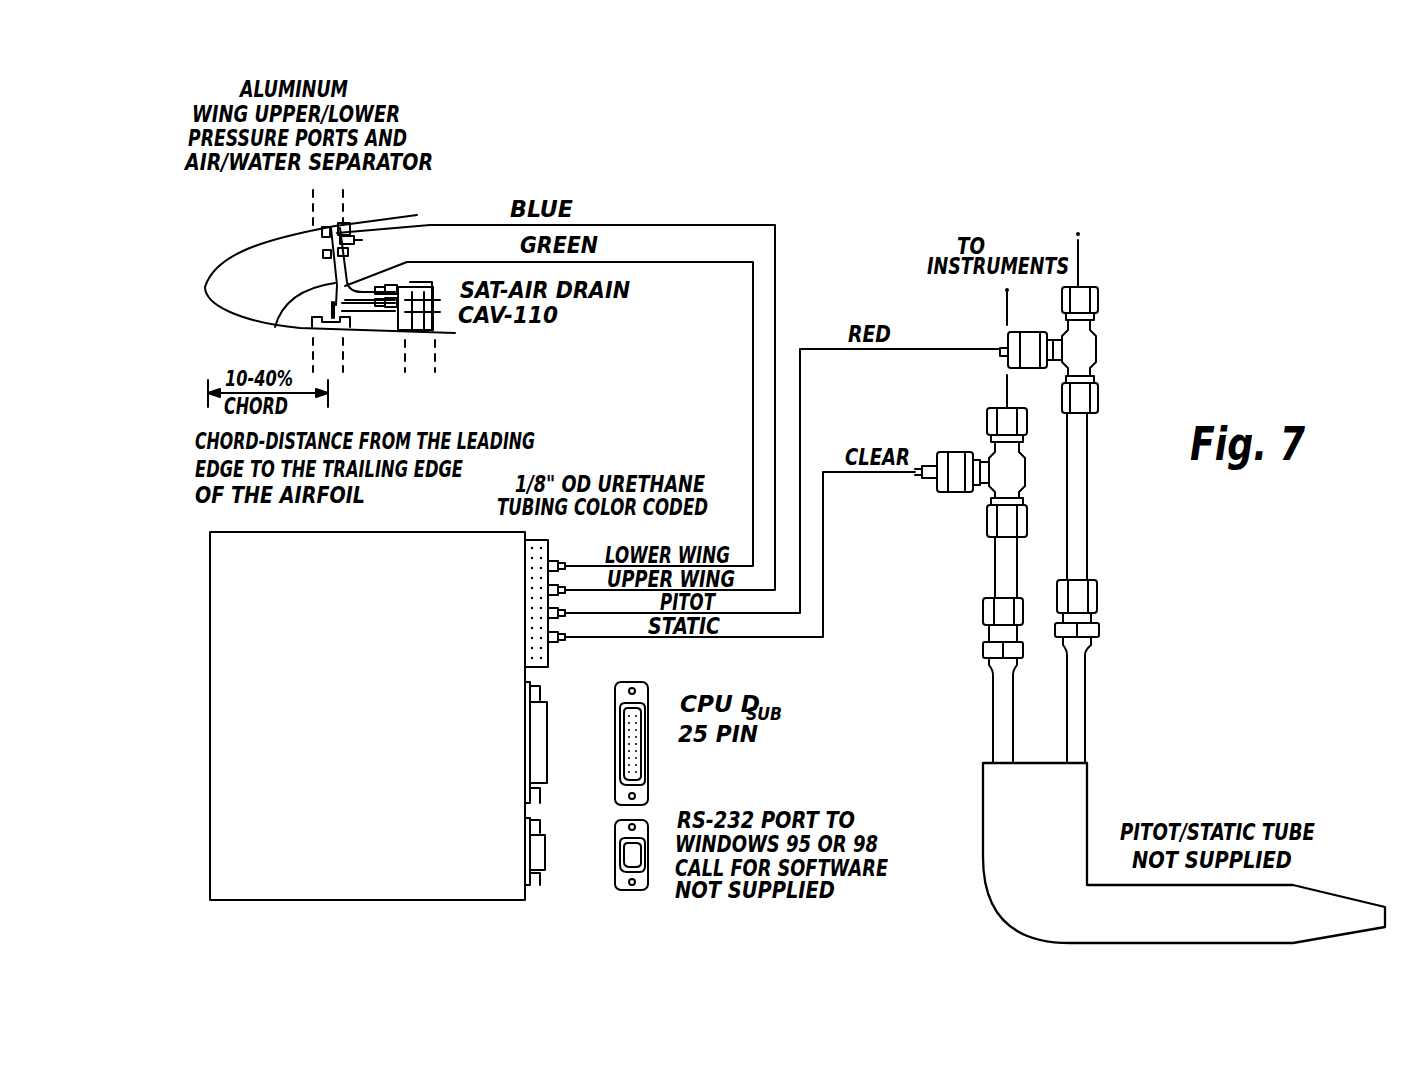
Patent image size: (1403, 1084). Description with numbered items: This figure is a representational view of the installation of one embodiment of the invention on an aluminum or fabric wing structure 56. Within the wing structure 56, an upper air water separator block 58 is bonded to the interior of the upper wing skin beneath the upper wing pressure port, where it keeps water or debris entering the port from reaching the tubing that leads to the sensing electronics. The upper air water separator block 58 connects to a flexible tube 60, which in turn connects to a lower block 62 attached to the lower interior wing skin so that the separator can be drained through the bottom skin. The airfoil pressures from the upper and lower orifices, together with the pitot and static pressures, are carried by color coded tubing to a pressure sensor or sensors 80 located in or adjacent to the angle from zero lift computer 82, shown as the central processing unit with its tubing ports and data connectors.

The aluminum or fabric wing structure 56 is at (227, 303).
The upper air water separator block 58 is at (318, 240).
The flexible tube 60 is at (288, 318).
The lower block 62 is at (437, 323).
The pressure sensor 80 is at (548, 545).
The angle from zero lift computer 82 is at (483, 899).